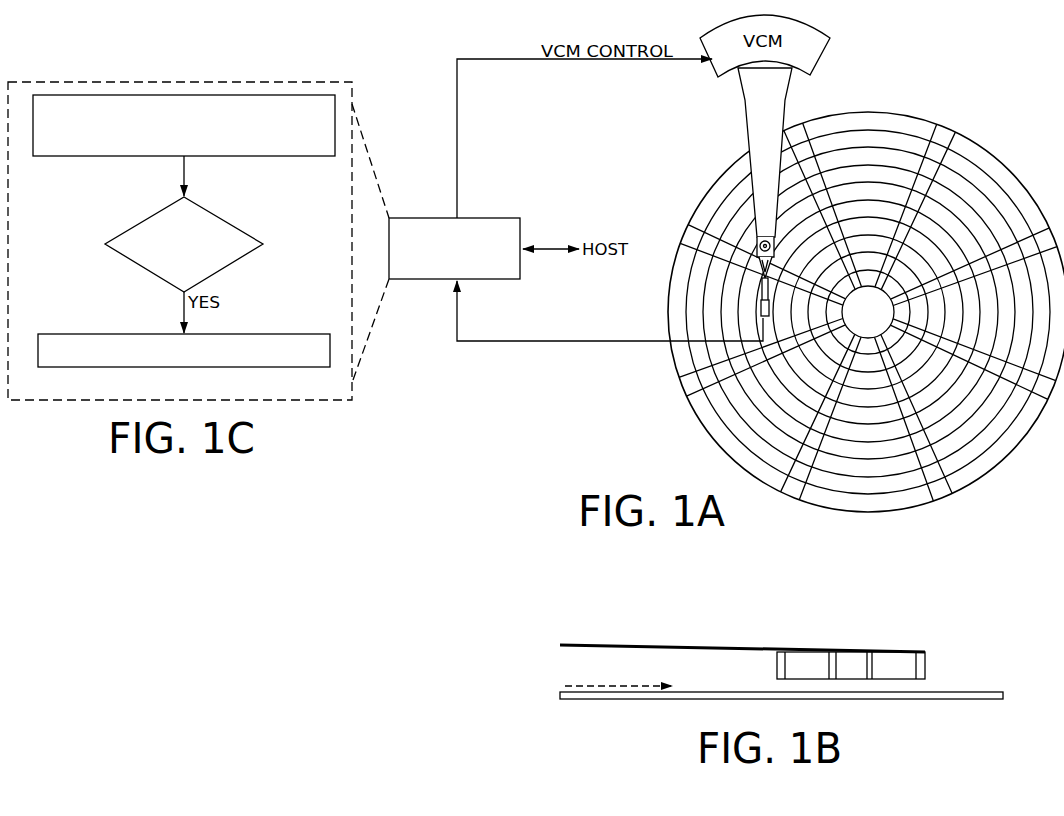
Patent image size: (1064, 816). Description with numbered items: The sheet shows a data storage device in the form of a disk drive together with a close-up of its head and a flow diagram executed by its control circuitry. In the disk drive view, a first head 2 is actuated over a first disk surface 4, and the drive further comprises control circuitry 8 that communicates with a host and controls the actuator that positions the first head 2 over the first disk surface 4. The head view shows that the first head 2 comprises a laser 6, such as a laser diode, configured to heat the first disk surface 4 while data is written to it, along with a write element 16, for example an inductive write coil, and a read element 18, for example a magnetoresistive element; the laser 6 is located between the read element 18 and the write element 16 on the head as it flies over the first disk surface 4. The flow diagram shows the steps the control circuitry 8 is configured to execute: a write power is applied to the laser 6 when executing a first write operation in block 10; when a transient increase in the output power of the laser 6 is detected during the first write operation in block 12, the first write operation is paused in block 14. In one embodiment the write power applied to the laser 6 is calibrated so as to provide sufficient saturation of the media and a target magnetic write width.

In FIG. 1A, the first head 2 is at (760, 314).
In FIG. 1B, the first head 2 is at (877, 644).
In FIG. 1A, the first disk surface 4 is at (1008, 156).
In FIG. 1B, the first disk surface 4 is at (1007, 691).
In FIG. 1B, the laser 6 is at (846, 652).
In FIG. 1A, the control circuitry 8 is at (492, 218).
In FIG. 1C, the block 10 is at (300, 157).
In FIG. 1C, the block 12 is at (227, 269).
In FIG. 1C, the block 14 is at (293, 368).
In FIG. 1B, the write element 16 is at (917, 652).
In FIG. 1B, the read element 18 is at (806, 652).